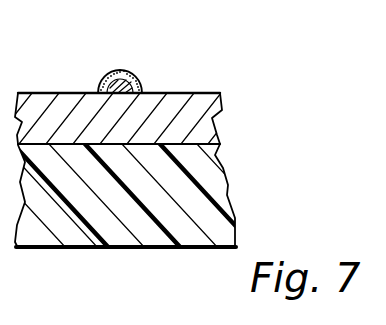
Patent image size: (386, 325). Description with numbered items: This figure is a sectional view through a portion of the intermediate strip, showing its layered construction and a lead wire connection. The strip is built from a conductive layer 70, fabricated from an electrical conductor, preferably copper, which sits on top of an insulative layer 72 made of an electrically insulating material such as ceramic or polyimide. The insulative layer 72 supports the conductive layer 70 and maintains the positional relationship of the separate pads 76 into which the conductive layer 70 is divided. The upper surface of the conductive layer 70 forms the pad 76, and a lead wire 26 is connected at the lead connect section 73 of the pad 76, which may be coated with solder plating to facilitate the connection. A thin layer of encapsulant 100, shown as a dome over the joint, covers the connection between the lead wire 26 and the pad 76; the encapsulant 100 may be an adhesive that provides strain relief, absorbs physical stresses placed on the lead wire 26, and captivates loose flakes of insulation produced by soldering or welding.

The encapsulant 100 is at (100, 82).
The lead connect section 73 is at (136, 58).
The lead wire 26 is at (137, 80).
The pad 76 is at (217, 107).
The conductive layer 70 is at (200, 130).
The insulative layer 72 is at (215, 185).